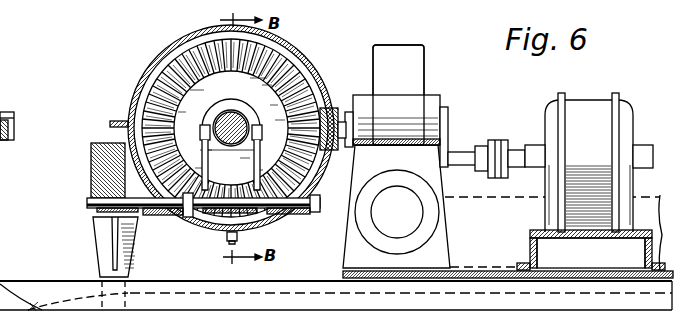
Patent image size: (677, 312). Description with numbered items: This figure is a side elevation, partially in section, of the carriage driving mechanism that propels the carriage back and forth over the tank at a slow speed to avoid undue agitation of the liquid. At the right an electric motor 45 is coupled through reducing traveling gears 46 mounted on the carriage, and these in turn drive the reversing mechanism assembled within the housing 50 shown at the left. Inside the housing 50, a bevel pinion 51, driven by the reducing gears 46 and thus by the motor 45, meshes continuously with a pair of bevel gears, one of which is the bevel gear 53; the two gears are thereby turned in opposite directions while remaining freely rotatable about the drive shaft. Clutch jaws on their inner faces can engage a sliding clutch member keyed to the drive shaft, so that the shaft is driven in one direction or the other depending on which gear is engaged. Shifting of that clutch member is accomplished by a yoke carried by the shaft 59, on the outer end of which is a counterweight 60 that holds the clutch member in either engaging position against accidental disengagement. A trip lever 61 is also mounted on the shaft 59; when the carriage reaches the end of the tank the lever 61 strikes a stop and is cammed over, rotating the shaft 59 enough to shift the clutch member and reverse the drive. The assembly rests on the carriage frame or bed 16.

The frame bed 16 is at (336, 253).
The electric motor 45 is at (591, 99).
The reducing traveling gears 46 is at (418, 73).
The housing 50 is at (292, 43).
The bevel pinion 51 is at (322, 95).
The bevel gear 53 is at (290, 60).
The shaft 59 is at (88, 203).
The counterweight 60 is at (90, 152).
The trip lever 61 is at (97, 246).